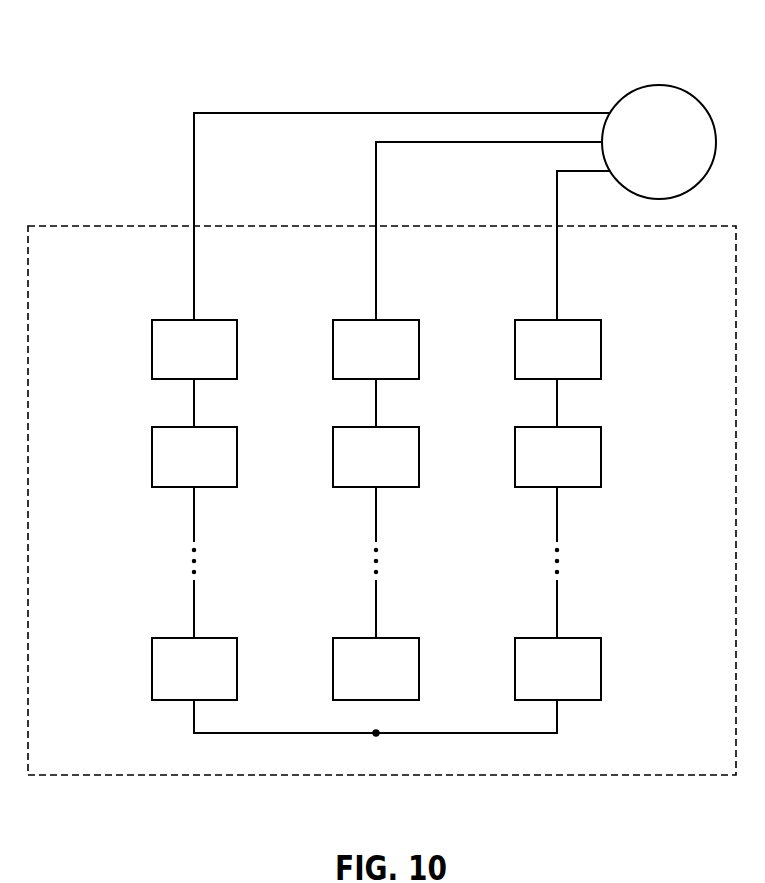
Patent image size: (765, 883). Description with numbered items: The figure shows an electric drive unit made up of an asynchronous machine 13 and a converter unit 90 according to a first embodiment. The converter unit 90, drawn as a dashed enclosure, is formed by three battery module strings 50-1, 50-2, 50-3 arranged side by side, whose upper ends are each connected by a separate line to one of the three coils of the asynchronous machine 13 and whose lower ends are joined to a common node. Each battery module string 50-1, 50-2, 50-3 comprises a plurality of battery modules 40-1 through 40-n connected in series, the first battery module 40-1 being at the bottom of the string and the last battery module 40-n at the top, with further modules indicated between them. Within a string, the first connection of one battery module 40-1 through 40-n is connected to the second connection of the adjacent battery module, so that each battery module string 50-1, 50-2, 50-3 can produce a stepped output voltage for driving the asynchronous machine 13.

The asynchronous machine 13 is at (663, 84).
The converter unit 90 is at (110, 225).
The battery module 40-n is at (152, 353).
The battery module 40-1 is at (152, 680).
The battery module string 50-1 is at (225, 312).
The battery module string 50-2 is at (413, 312).
The battery module string 50-3 is at (588, 312).